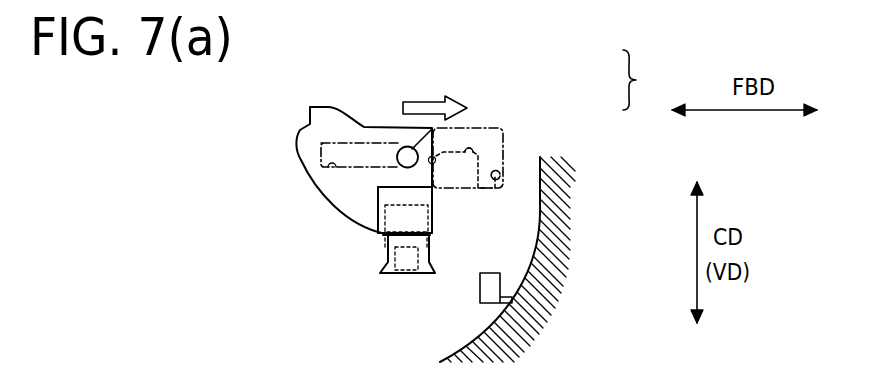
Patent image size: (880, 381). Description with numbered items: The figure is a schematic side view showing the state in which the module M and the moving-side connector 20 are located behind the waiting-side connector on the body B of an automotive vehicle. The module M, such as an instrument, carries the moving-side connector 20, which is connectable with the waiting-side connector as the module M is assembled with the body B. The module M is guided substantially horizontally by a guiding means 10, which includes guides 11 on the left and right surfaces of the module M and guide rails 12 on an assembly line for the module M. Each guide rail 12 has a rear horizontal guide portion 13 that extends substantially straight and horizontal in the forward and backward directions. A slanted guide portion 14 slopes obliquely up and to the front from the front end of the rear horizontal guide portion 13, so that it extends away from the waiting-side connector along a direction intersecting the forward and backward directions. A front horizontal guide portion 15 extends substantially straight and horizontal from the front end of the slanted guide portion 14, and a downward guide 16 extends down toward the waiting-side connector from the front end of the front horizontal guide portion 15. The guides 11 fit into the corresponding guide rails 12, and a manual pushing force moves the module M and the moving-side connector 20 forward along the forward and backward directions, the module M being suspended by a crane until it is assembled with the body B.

The module M is at (301, 157).
The guiding means 10 is at (639, 80).
The guides 11 is at (407, 156).
The guide rails 12 is at (487, 124).
The rear horizontal guide portion 13 is at (336, 167).
The slanted guide portion 14 is at (436, 161).
The front horizontal guide portion 15 is at (471, 157).
The downward guide 16 is at (501, 181).
The moving-side connector 20 is at (385, 240).
The body B is at (464, 352).